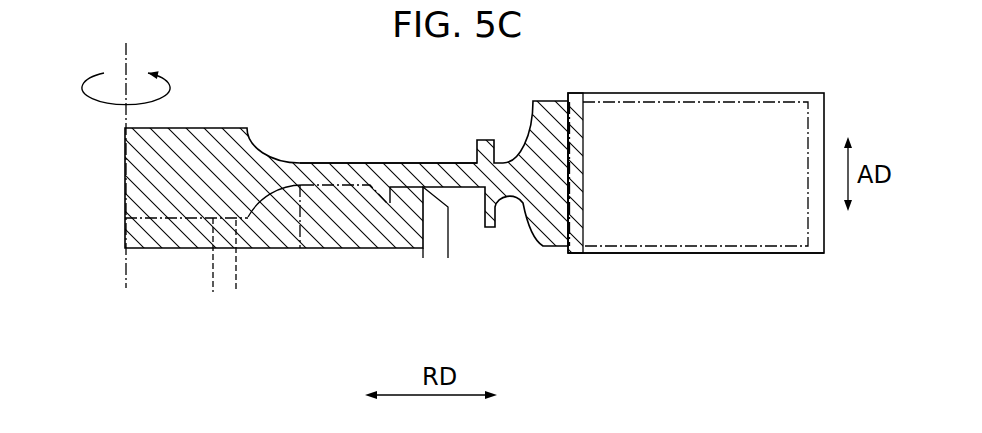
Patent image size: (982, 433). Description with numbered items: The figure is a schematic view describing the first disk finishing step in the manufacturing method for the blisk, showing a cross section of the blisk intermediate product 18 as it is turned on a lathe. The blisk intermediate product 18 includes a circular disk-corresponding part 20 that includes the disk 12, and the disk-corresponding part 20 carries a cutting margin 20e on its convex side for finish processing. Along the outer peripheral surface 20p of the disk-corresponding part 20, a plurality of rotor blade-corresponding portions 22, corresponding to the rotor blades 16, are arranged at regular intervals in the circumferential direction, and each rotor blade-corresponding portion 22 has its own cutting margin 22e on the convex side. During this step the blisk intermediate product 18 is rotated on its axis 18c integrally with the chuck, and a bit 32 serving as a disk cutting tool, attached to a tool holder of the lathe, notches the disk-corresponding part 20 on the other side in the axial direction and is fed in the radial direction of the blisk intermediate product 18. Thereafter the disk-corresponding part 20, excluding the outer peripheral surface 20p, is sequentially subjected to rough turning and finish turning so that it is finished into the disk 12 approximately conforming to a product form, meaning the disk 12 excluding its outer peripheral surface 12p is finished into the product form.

The disk 12 is at (300, 249).
The outer peripheral surface 12p is at (569, 197).
The rotor blades 16 is at (733, 254).
The blisk intermediate product 18 is at (315, 161).
The axis 18c is at (125, 62).
The disk-corresponding part 20 is at (163, 248).
The cutting margin 20e is at (367, 248).
The outer peripheral surface 20p is at (583, 131).
The rotor blade-corresponding portions 22 is at (755, 93).
The cutting margin 22e is at (633, 254).
The bit 32 is at (243, 292).